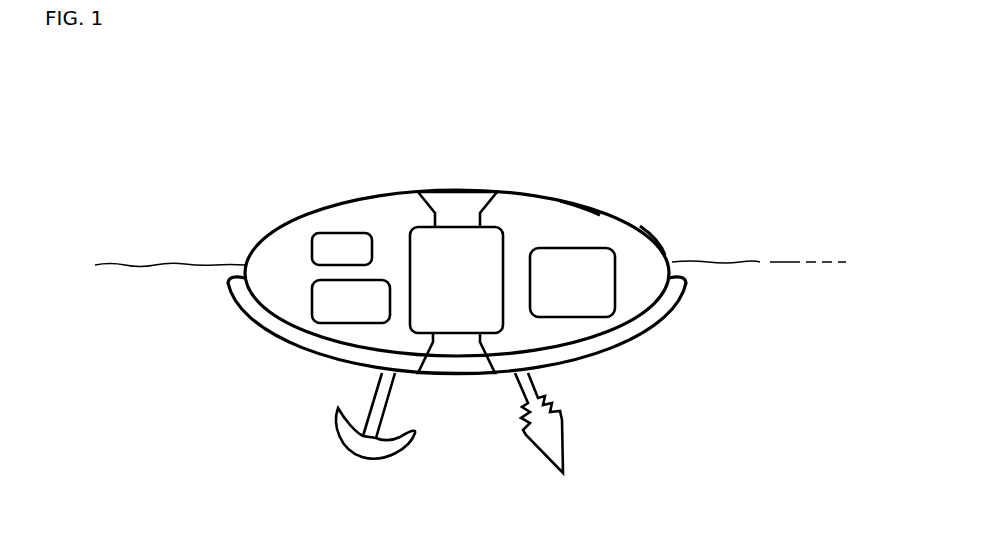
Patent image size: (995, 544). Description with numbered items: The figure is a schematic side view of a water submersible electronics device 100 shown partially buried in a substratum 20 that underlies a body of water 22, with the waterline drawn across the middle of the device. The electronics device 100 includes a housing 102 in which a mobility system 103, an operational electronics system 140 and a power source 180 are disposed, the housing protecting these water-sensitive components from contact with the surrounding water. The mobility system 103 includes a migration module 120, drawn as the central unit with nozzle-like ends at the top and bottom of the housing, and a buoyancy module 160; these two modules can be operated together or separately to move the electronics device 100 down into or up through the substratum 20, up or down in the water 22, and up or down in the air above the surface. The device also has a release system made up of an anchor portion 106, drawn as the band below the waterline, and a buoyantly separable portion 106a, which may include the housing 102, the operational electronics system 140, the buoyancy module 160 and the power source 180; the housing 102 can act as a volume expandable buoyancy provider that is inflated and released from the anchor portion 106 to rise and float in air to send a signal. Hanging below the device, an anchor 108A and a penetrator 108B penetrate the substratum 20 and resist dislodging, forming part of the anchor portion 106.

The electronics device 100 is at (321, 128).
The housing 102 is at (537, 185).
The mobility system 103 is at (582, 204).
The anchor portion 106 is at (692, 289).
The buoyantly separable portion 106a is at (664, 237).
The migration module 120 is at (499, 224).
The operational electronics system 140 is at (306, 248).
The buoyancy module 160 is at (572, 313).
The power source 180 is at (342, 320).
The anchor 108A is at (345, 453).
The penetrator 108B is at (572, 455).
The substratum 20 is at (145, 392).
The body of water 22 is at (812, 113).